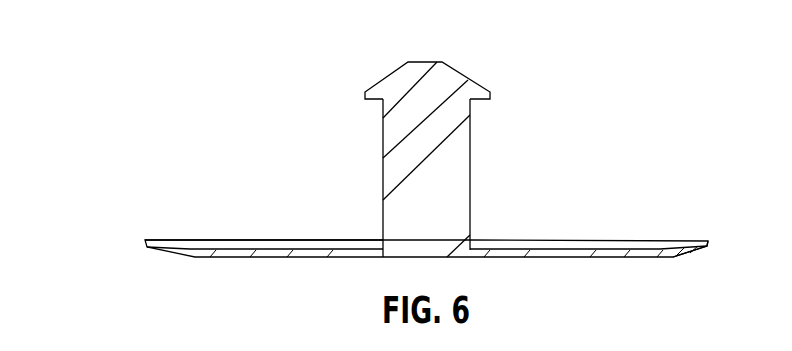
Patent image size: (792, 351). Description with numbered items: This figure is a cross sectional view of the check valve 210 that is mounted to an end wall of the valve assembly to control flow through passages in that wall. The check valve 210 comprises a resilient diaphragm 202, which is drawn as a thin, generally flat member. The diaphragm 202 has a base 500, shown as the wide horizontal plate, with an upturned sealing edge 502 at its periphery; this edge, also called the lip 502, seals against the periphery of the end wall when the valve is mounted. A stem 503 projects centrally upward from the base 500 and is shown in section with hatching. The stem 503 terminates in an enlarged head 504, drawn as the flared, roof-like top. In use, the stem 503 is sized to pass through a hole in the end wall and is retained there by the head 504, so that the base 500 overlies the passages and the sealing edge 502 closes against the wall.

The resilient diaphragm 202 is at (253, 241).
The check valve 210 is at (529, 222).
The base 500 is at (657, 241).
The upturned sealing edge 502 is at (712, 245).
The stem 503 is at (460, 210).
The enlarged head 504 is at (478, 82).